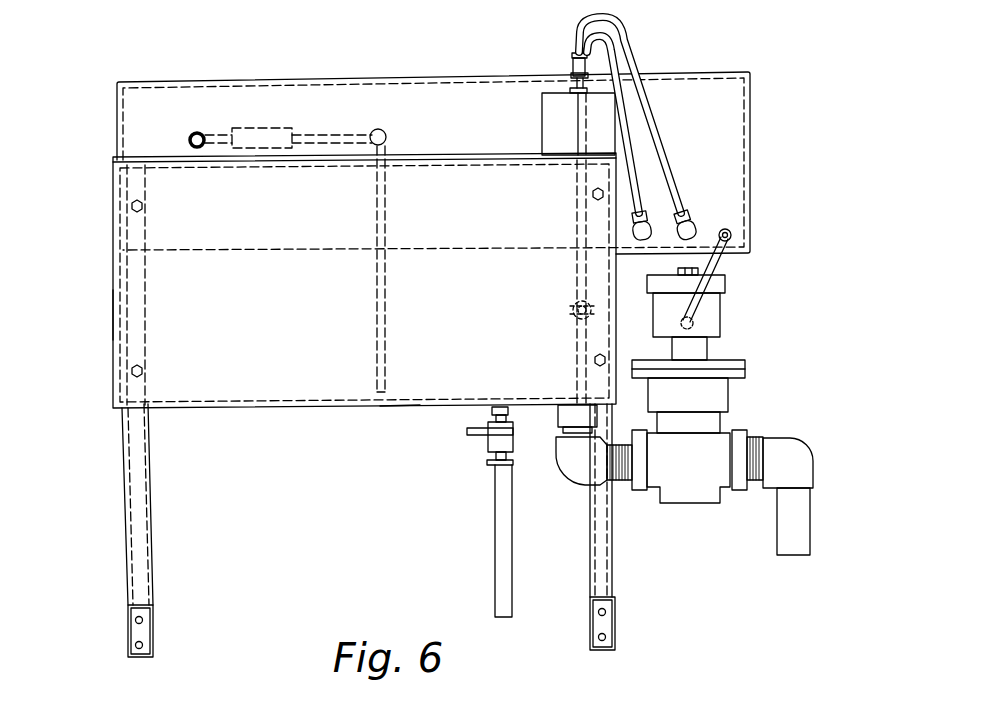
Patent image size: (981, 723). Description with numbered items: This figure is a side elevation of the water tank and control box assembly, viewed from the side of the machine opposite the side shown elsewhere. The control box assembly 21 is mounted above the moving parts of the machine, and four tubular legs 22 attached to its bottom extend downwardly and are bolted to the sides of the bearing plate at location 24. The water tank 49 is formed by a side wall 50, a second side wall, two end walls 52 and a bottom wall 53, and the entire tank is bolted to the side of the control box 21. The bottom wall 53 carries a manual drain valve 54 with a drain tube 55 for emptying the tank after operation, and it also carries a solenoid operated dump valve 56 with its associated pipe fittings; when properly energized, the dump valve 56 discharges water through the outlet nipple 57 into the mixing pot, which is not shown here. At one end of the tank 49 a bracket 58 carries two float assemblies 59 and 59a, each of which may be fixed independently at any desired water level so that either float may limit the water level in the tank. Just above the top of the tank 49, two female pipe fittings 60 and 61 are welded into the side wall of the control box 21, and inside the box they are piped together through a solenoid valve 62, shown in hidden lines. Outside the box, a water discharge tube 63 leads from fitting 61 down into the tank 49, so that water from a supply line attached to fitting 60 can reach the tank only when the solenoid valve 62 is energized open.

The control box assembly 21 is at (739, 64).
The tubular legs 22 is at (148, 495).
The bolting location 24 is at (143, 630).
The water tank 49 is at (108, 316).
The side wall 50 is at (287, 372).
The end walls 52 is at (111, 350).
The bottom wall 53 is at (402, 406).
The manual drain valve 54 is at (488, 440).
The drain tube 55 is at (496, 553).
The solenoid operated dump valve 56 is at (729, 420).
The outlet nipple 57 is at (813, 532).
The bracket 58 is at (541, 120).
The float assembly 59 is at (572, 322).
The float assembly 59a is at (551, 337).
The female pipe fitting 60 is at (191, 134).
The female pipe fitting 61 is at (386, 137).
The solenoid valve 62 is at (279, 128).
The water discharge tube 63 is at (390, 217).